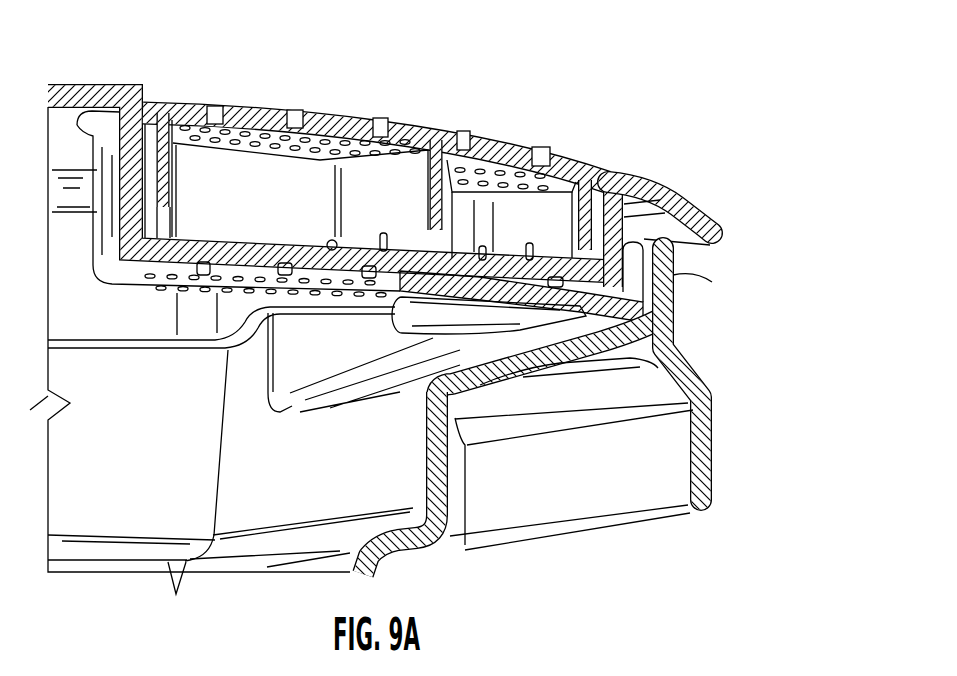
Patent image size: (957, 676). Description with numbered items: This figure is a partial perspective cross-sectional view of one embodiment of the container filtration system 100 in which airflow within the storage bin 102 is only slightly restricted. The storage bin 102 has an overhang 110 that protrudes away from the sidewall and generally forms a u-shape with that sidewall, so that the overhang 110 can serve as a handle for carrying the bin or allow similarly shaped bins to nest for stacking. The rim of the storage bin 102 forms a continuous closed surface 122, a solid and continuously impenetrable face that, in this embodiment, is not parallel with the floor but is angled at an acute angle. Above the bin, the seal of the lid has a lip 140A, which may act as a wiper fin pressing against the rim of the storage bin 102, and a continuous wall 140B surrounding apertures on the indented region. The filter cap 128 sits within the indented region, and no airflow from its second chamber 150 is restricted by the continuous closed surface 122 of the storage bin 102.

The container filtration system 100 is at (674, 90).
The storage bin 102 is at (427, 557).
The overhang 110 is at (703, 433).
The continuous closed surface 122 is at (640, 347).
The filter cap 128 is at (495, 155).
The lip 140A is at (621, 293).
The continuous wall 140B is at (590, 313).
The second chamber 150 is at (537, 187).